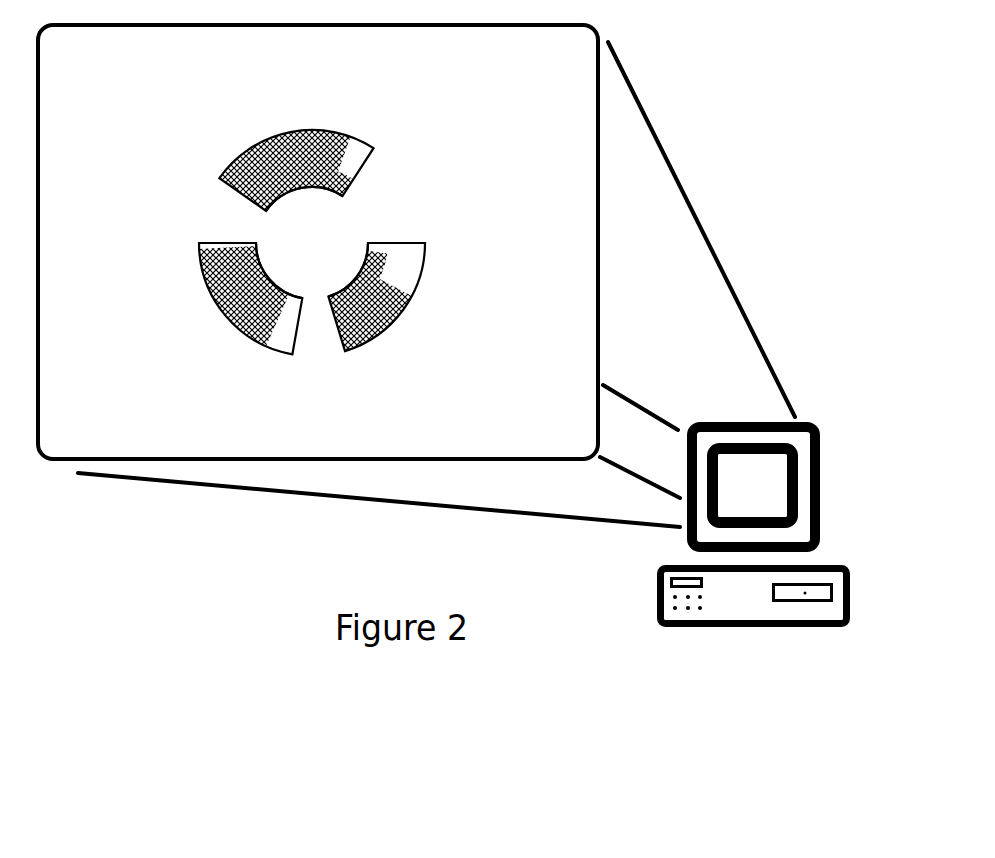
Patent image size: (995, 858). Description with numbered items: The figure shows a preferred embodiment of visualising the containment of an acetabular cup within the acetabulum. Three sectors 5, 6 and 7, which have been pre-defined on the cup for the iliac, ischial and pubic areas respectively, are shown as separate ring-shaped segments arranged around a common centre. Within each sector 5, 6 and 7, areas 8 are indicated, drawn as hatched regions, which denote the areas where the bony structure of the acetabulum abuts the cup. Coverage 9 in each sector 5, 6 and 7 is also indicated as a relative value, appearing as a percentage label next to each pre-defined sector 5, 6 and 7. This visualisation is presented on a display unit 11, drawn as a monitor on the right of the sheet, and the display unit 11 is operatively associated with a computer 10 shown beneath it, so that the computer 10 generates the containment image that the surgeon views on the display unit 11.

The sector 5 is at (362, 140).
The sector 6 is at (393, 241).
The sector 7 is at (294, 357).
The areas 8 is at (363, 262).
The coverage 9 is at (311, 82).
The computer 10 is at (738, 602).
The display unit 11 is at (767, 484).